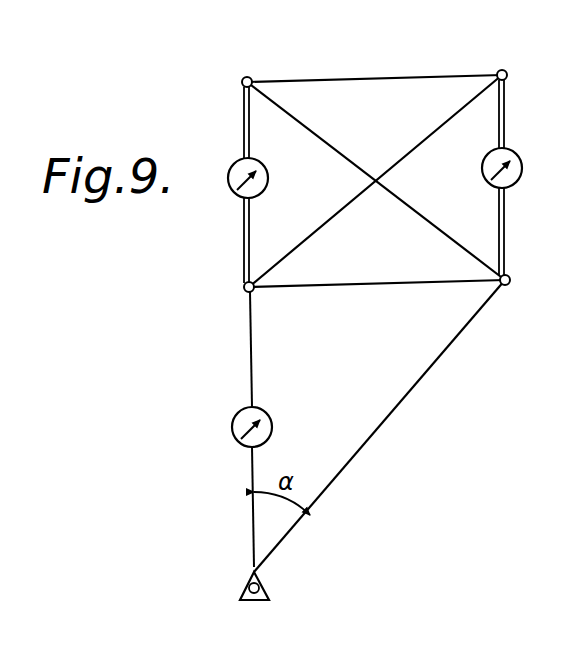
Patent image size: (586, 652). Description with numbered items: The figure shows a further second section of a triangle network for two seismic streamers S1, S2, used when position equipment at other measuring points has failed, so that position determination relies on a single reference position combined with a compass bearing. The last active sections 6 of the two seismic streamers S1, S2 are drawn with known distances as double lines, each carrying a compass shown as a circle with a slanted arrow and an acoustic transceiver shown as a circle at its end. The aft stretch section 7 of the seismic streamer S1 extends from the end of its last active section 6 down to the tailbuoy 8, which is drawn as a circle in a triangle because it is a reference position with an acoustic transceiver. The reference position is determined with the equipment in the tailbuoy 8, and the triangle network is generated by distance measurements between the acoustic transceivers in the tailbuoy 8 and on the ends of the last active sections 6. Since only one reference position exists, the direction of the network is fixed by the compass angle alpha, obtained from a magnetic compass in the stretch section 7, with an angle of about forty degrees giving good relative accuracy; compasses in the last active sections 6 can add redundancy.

The seismic streamer S1 is at (227, 161).
The seismic streamer S2 is at (487, 156).
The last active sections 6 is at (243, 134).
The aft stretch section 7 is at (250, 366).
The tailbuoy 8 is at (237, 598).